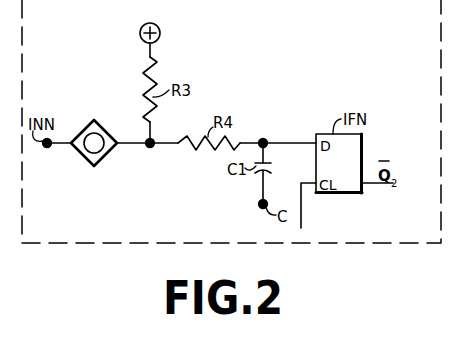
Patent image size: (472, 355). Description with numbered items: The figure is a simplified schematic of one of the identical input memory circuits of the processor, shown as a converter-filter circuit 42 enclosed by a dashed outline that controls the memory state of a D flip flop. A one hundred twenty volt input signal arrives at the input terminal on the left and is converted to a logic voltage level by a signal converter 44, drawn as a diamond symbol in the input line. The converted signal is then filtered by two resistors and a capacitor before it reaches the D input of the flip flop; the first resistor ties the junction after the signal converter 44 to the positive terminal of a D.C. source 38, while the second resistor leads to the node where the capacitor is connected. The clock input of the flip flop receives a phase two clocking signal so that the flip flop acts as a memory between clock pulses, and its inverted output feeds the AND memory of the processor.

The D.C. source 38 is at (160, 31).
The converter-filter circuit 42 is at (293, 88).
The signal converter 44 is at (106, 156).